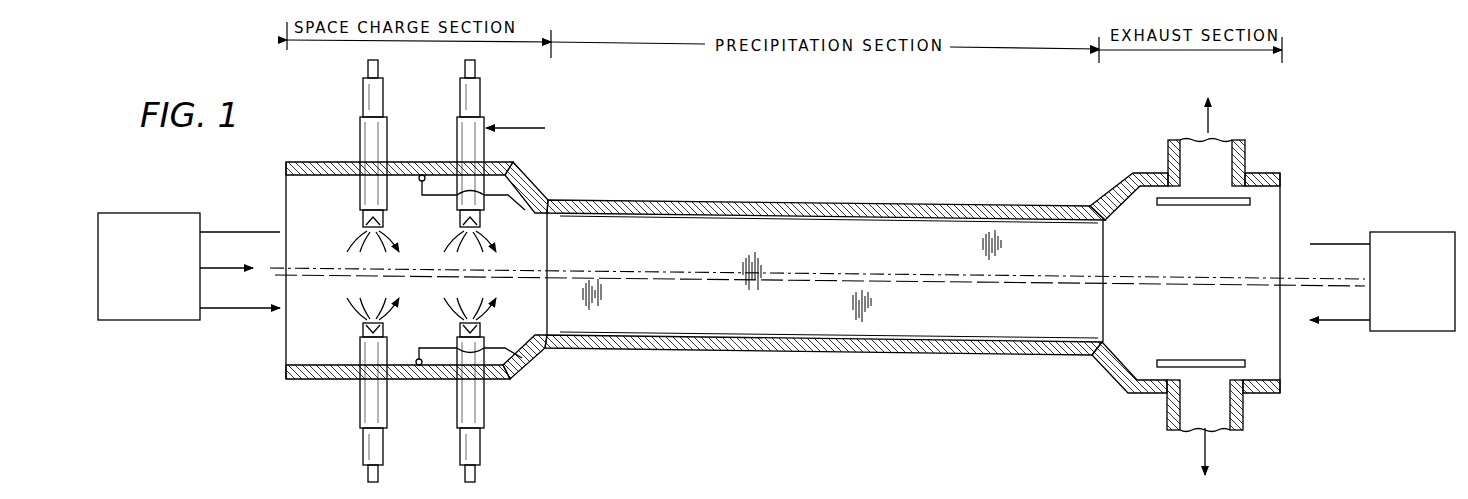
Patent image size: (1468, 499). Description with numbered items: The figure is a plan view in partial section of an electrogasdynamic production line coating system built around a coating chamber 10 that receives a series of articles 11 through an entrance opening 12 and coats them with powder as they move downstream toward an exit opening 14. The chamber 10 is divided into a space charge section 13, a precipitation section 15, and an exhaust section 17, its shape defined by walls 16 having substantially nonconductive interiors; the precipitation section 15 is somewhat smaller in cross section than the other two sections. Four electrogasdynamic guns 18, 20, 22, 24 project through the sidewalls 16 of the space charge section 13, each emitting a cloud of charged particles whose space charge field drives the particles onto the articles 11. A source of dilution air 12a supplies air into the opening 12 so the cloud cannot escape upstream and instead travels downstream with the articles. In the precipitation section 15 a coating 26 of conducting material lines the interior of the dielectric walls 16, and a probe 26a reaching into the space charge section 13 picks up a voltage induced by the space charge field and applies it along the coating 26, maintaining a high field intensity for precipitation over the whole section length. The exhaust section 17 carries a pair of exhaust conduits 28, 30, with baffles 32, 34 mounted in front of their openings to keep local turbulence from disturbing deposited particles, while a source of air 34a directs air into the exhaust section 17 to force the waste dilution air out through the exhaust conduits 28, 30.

The coating chamber 10 is at (781, 286).
The articles 11 is at (660, 280).
The opening 12 is at (283, 350).
The source of dilution air 12a is at (167, 212).
The space charge section 13 is at (400, 143).
The opening 14 is at (1279, 357).
The precipitation section 15 is at (825, 265).
The walls 16 is at (702, 200).
The exhaust section 17 is at (1242, 133).
The EGD gun 18 is at (358, 135).
The EGD gun 20 is at (457, 130).
The EGD gun 22 is at (357, 418).
The EGD gun 24 is at (457, 418).
The coating of conducting material 26 is at (872, 212).
The probe 26a is at (520, 200).
The exhaust conduit 28 is at (1168, 155).
The exhaust conduit 30 is at (1245, 422).
The baffle 32 is at (1193, 207).
The baffle 34 is at (1196, 360).
The source of air 34a is at (1408, 231).